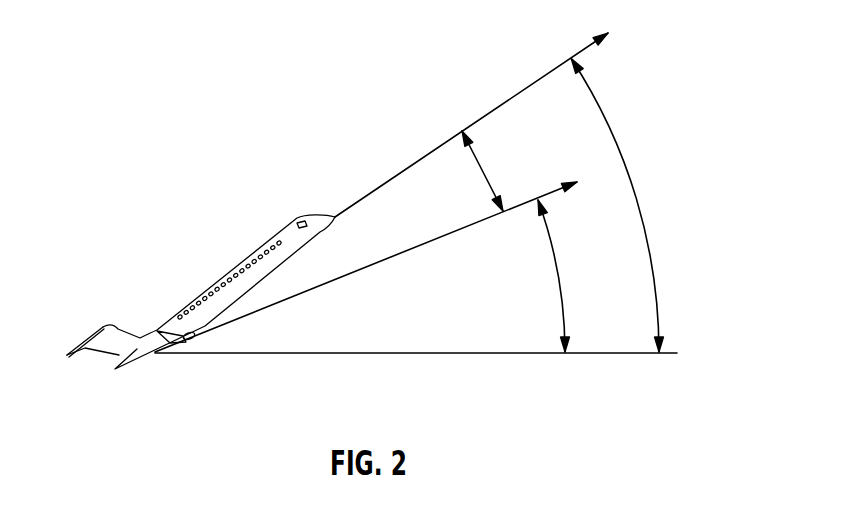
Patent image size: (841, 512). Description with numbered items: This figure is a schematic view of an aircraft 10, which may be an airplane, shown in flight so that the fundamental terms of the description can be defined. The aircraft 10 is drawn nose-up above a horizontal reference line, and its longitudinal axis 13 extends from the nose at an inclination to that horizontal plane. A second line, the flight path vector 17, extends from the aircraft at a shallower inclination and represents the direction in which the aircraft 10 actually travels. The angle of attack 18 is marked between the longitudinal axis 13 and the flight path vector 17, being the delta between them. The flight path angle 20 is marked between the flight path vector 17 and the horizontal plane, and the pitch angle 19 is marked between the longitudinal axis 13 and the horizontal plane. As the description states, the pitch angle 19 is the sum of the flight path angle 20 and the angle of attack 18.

The aircraft 10 is at (147, 330).
The longitudinal axis 13 is at (542, 76).
The flight path vector 17 is at (452, 232).
The angle of attack 18 is at (478, 160).
The pitch angle 19 is at (611, 131).
The flight path angle 20 is at (552, 248).